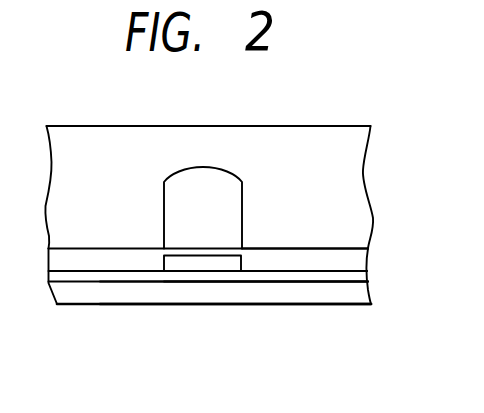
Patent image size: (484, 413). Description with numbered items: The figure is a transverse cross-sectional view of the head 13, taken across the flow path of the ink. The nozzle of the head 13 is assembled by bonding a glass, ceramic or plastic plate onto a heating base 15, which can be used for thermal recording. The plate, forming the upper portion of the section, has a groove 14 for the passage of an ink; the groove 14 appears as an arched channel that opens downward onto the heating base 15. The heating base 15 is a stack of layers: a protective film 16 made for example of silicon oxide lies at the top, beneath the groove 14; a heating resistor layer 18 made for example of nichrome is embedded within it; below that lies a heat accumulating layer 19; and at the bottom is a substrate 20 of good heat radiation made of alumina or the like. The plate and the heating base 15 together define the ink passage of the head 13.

The head 13 is at (67, 126).
The groove 14 is at (207, 167).
The heating base 15 is at (405, 243).
The protective film 16 is at (253, 254).
The heating resistor layer 18 is at (227, 266).
The heat accumulating layer 19 is at (280, 277).
The substrate 20 is at (343, 304).